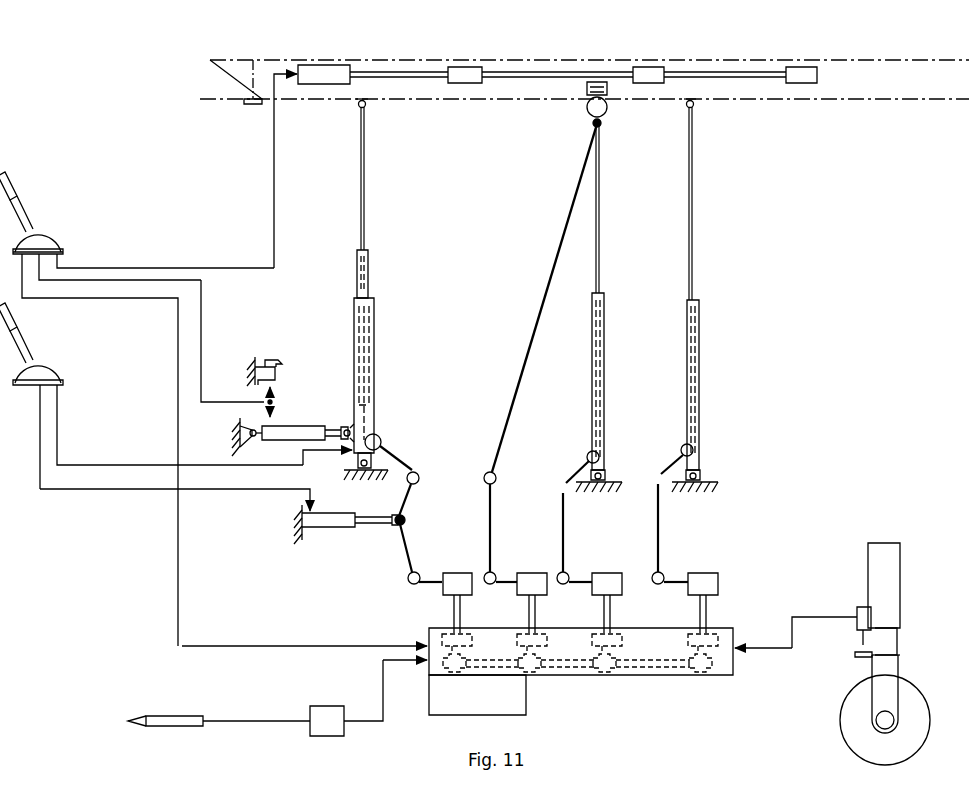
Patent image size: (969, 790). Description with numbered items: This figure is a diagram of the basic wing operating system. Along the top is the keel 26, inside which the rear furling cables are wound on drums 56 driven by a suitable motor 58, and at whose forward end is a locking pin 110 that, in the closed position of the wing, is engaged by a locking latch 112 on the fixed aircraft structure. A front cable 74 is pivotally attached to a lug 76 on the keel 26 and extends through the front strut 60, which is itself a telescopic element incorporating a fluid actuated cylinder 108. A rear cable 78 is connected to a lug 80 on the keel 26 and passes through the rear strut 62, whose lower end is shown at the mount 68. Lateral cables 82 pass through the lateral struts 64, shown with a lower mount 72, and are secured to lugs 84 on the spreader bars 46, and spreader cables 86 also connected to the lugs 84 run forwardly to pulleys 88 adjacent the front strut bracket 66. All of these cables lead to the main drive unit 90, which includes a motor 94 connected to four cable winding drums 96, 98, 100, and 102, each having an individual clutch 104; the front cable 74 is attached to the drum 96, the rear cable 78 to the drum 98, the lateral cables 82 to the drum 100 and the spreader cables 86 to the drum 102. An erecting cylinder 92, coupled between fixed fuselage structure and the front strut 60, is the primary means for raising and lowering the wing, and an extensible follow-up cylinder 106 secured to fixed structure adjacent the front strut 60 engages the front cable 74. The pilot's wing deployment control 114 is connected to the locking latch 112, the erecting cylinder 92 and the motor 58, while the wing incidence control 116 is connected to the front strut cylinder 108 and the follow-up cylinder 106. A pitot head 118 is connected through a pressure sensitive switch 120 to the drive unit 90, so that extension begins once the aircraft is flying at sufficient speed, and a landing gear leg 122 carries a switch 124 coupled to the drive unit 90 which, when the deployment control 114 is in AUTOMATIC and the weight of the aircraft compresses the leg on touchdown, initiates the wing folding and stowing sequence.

The keel 26 is at (730, 61).
The spreader bars 46 is at (586, 112).
The drums 56 is at (463, 67).
The motor 58 is at (328, 65).
The front strut 60 is at (370, 283).
The rear strut 62 is at (700, 365).
The lateral struts 64 is at (593, 351).
The front strut bracket 66 is at (356, 471).
The pivot mount 68 is at (703, 474).
The pivot mount 72 is at (606, 478).
The front cable 74 is at (368, 182).
The lug 76 is at (357, 107).
The rear cable 78 is at (697, 227).
The lug 80 is at (697, 106).
The lateral cables 82 is at (601, 251).
The lugs 84 is at (604, 121).
The spreader cables 86 is at (550, 265).
The pulleys 88 is at (495, 472).
The main drive unit 90 is at (640, 678).
The erecting cylinder 92 is at (300, 426).
The motor 94 is at (516, 707).
The cable winding drum 96 is at (457, 573).
The cable winding drum 98 is at (715, 573).
The cable winding drum 100 is at (608, 573).
The cable winding drum 102 is at (531, 573).
The clutch 104 is at (512, 630).
The follow-up cylinder 106 is at (345, 528).
The fluid actuated cylinder 108 is at (377, 352).
The locking pin 110 is at (250, 102).
The locking latch 112 is at (270, 358).
The wing deployment control 114 is at (50, 241).
The wing incidence control 116 is at (52, 372).
The pitot head 118 is at (176, 716).
The pressure sensitive switch 120 is at (326, 706).
The landing gear leg 122 is at (904, 570).
The switch 124 is at (856, 607).